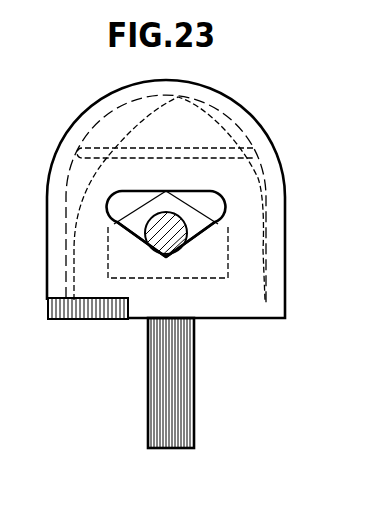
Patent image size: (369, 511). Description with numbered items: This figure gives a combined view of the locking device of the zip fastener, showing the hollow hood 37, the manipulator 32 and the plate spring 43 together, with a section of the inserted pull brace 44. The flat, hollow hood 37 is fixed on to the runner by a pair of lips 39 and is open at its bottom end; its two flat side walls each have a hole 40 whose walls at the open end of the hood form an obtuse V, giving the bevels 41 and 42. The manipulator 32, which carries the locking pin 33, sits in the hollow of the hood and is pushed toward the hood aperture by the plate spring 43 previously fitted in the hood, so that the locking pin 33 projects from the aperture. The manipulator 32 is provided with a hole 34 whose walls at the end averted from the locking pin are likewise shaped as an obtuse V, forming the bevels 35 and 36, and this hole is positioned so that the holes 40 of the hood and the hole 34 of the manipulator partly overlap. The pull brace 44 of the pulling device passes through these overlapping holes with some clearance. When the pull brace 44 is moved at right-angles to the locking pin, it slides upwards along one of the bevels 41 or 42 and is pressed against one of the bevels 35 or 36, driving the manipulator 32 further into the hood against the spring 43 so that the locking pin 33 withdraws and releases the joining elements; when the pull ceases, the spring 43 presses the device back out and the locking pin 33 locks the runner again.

The manipulator 32 is at (228, 278).
The locking pin 33 is at (177, 400).
The hole 34 is at (190, 268).
The bevel 35 is at (128, 210).
The bevel 36 is at (198, 203).
The hollow hood 37 is at (178, 117).
The lips 39 is at (92, 313).
The hole 40 is at (212, 205).
The bevel 41 is at (128, 240).
The bevel 42 is at (204, 238).
The plate spring 43 is at (127, 155).
The pull brace 44 is at (160, 256).